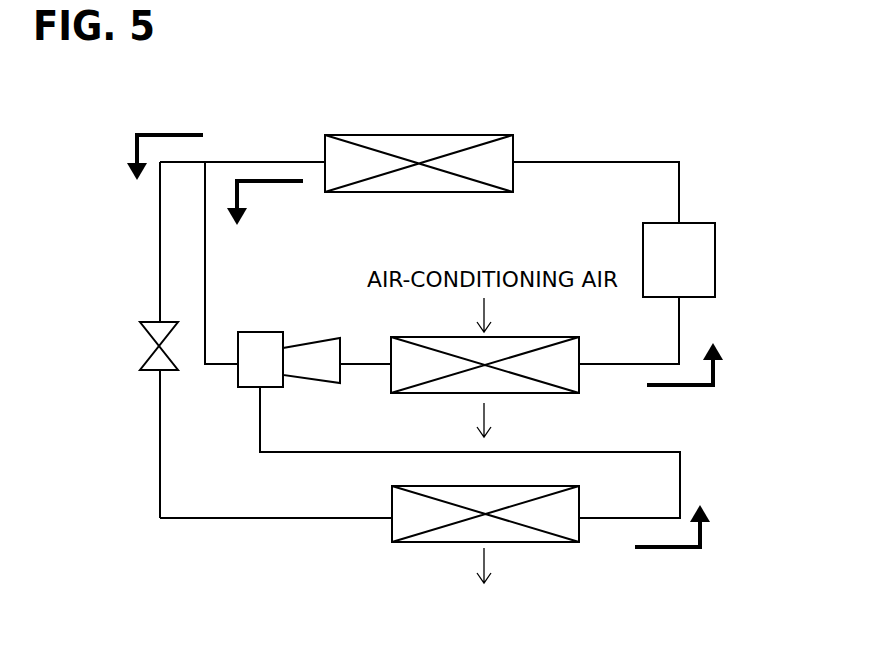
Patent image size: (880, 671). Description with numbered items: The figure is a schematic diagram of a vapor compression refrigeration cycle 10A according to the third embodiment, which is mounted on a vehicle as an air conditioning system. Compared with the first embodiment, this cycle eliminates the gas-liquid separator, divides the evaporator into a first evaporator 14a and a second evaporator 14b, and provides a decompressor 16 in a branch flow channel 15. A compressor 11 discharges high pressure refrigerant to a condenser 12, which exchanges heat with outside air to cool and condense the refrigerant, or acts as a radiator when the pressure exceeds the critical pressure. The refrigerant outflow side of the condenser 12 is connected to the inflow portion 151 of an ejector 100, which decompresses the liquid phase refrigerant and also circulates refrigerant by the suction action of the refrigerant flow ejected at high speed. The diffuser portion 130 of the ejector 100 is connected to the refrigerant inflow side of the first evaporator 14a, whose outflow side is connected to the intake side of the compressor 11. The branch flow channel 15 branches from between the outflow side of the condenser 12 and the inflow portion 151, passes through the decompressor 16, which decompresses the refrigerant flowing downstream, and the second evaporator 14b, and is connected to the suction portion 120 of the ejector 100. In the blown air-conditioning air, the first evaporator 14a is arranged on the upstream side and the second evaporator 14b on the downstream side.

The refrigeration cycle 10A is at (242, 145).
The compressor 11 is at (700, 223).
The condenser 12 is at (468, 135).
The first evaporator 14a is at (560, 338).
The second evaporator 14b is at (538, 543).
The branch flow channel 15 is at (160, 237).
The decompressor 16 is at (141, 336).
The ejector 100 is at (289, 356).
The suction portion 120 is at (263, 388).
The diffuser portion 130 is at (323, 381).
The inflow portion 151 is at (236, 366).